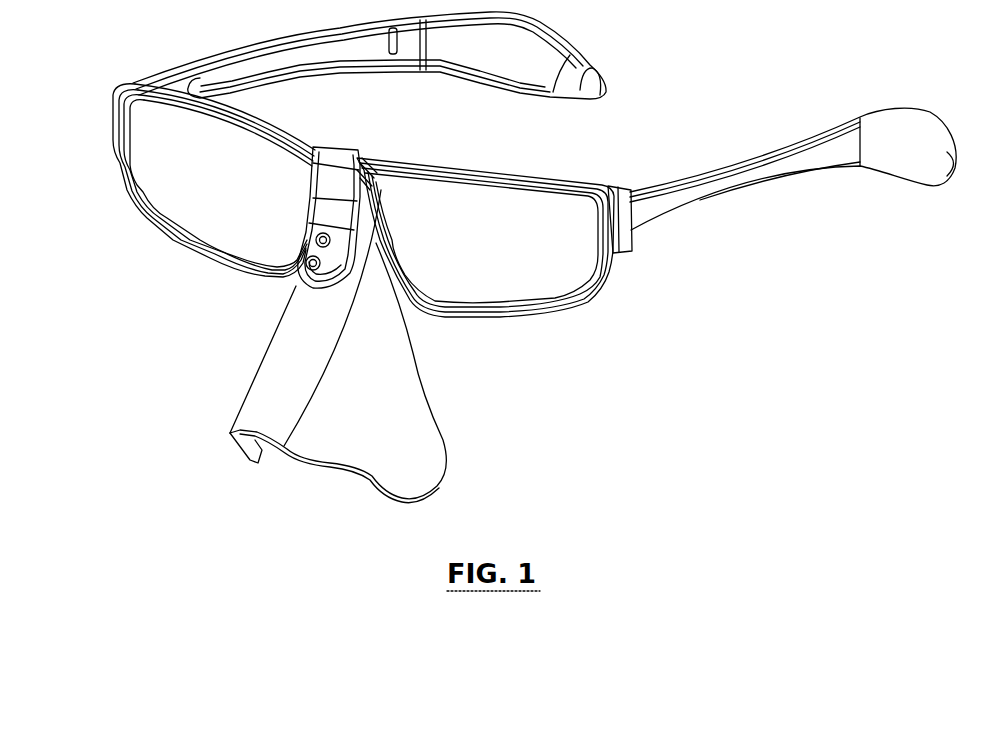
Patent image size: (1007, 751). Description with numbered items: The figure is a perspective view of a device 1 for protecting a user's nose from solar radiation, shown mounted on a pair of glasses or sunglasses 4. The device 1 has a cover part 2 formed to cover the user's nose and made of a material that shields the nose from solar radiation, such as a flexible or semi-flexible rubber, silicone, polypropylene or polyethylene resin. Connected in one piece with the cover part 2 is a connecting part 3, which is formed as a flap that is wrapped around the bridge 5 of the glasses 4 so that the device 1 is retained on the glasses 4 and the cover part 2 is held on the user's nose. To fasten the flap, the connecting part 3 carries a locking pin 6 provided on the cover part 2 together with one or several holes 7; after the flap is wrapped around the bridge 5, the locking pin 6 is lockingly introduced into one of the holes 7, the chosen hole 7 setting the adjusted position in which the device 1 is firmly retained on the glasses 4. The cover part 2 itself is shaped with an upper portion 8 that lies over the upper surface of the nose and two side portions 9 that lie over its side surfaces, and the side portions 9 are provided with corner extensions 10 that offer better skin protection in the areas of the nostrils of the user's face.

The device 1 is at (200, 314).
The cover part 2 is at (253, 370).
The connecting part 3 is at (331, 166).
The glasses or sunglasses 4 is at (112, 90).
The bridge 5 is at (374, 165).
The locking pin 6 is at (306, 263).
The holes 7 is at (316, 237).
The upper portion 8 is at (263, 393).
The side portions 9 is at (392, 386).
The corner extensions 10 is at (432, 447).